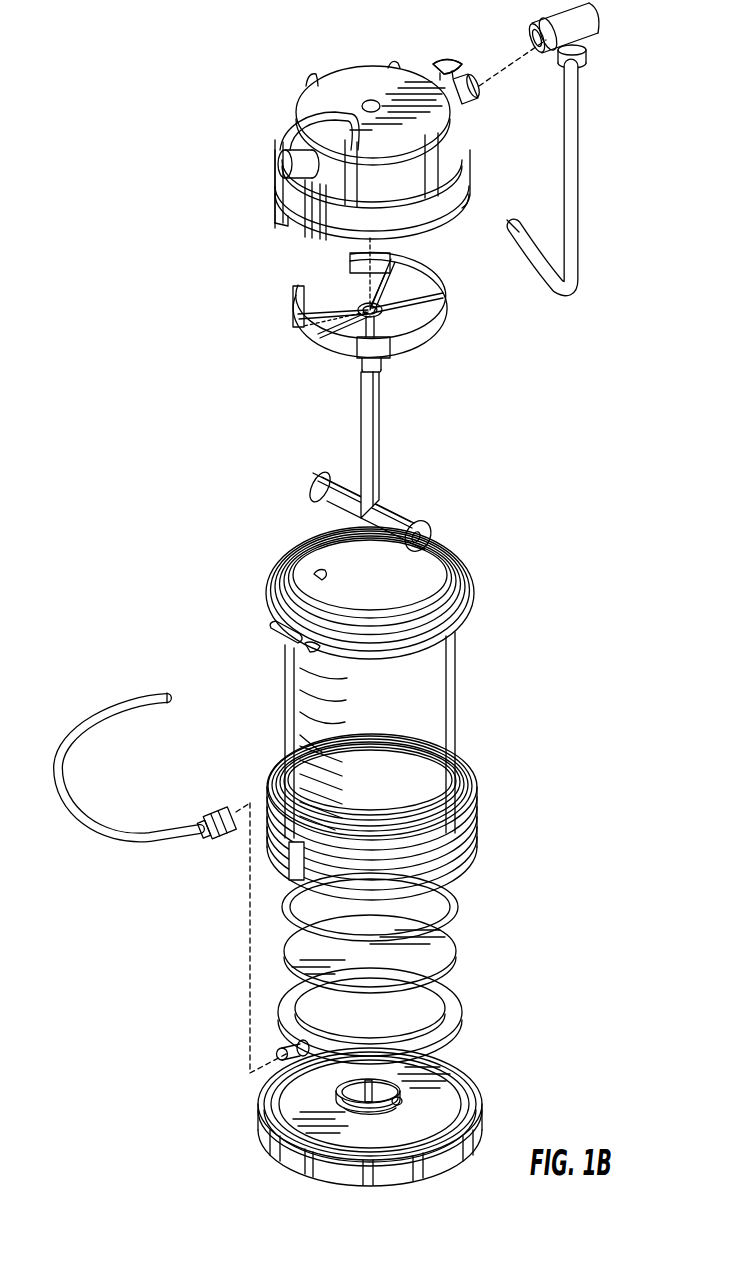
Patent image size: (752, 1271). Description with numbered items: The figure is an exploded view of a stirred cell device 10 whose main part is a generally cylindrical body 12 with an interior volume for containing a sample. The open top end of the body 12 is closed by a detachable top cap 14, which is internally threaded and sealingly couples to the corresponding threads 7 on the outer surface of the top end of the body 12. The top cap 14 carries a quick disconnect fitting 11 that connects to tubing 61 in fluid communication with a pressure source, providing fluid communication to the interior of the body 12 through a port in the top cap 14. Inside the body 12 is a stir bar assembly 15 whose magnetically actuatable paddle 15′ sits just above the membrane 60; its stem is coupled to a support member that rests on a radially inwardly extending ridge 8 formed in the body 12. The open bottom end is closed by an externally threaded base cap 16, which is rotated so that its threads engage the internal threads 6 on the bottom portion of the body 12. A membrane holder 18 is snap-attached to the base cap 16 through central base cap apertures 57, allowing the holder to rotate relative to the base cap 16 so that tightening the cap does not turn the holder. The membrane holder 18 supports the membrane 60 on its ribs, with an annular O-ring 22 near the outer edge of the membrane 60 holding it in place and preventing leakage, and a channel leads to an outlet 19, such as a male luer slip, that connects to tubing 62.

The internal threads 6 is at (455, 868).
The threads 7 is at (430, 615).
The ridge 8 is at (318, 575).
The stirred cell device 10 is at (570, 470).
The quick disconnect fitting 11 is at (462, 62).
The body 12 is at (283, 690).
The top cap 14 is at (275, 180).
The stir bar assembly 15 is at (357, 358).
The paddle 15′ is at (400, 517).
The base cap 16 is at (262, 1139).
The membrane holder 18 is at (280, 1007).
The outlet 19 is at (266, 1051).
The O-ring 22 is at (288, 904).
The central base cap aperture 57 is at (400, 1102).
The membrane 60 is at (294, 938).
The tubing 61 is at (590, 7).
The tubing 62 is at (117, 708).